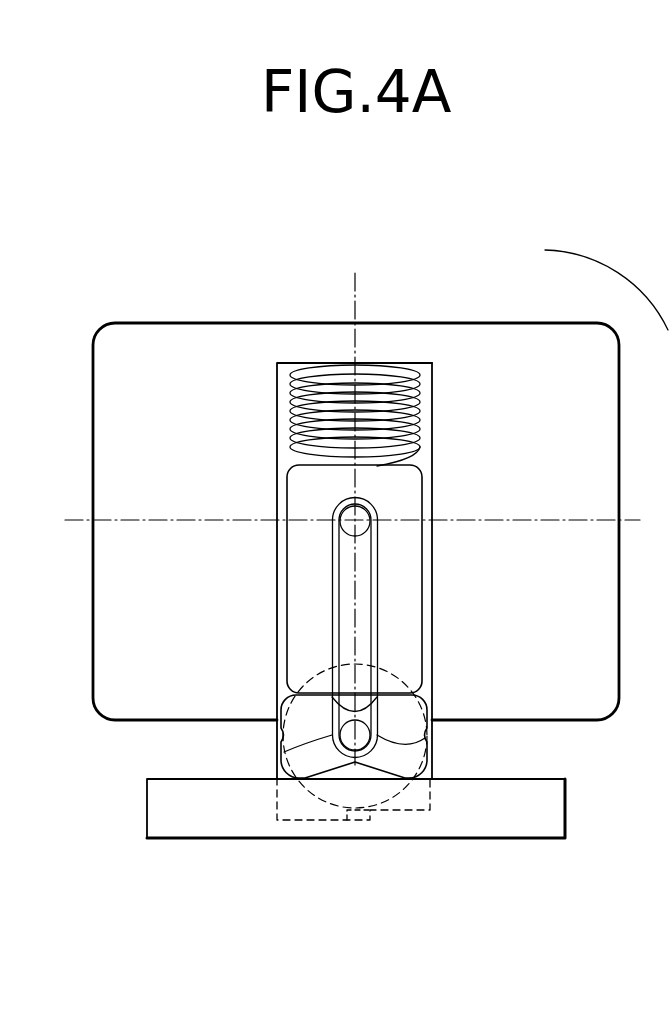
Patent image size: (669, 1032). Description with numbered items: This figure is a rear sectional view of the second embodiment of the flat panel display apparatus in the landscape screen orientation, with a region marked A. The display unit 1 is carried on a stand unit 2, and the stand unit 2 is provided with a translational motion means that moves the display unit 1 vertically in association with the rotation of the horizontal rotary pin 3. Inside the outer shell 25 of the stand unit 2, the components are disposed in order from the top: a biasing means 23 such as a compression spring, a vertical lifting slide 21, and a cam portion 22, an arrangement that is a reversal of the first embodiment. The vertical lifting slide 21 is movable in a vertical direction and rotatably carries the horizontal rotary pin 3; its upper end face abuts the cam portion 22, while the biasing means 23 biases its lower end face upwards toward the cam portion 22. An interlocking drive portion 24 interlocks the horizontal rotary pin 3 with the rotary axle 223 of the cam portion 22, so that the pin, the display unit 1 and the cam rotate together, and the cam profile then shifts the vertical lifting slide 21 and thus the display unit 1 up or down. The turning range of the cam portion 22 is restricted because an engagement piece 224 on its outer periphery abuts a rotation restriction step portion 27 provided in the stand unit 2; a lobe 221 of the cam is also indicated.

The display unit 1 is at (186, 324).
The stand unit 2 is at (158, 806).
The horizontal rotary pin 3 is at (333, 519).
The vertical lifting slide 21 is at (297, 616).
The cam portion 22 is at (425, 700).
The biasing means 23 is at (384, 370).
The interlocking drive portion 24 is at (422, 592).
The outer shell 25 is at (432, 452).
The rotation restriction step portion 27 is at (378, 815).
The right lobe 221 is at (407, 745).
The rotary axle 223 is at (285, 753).
The engagement piece 224 is at (345, 823).
The region A is at (606, 290).